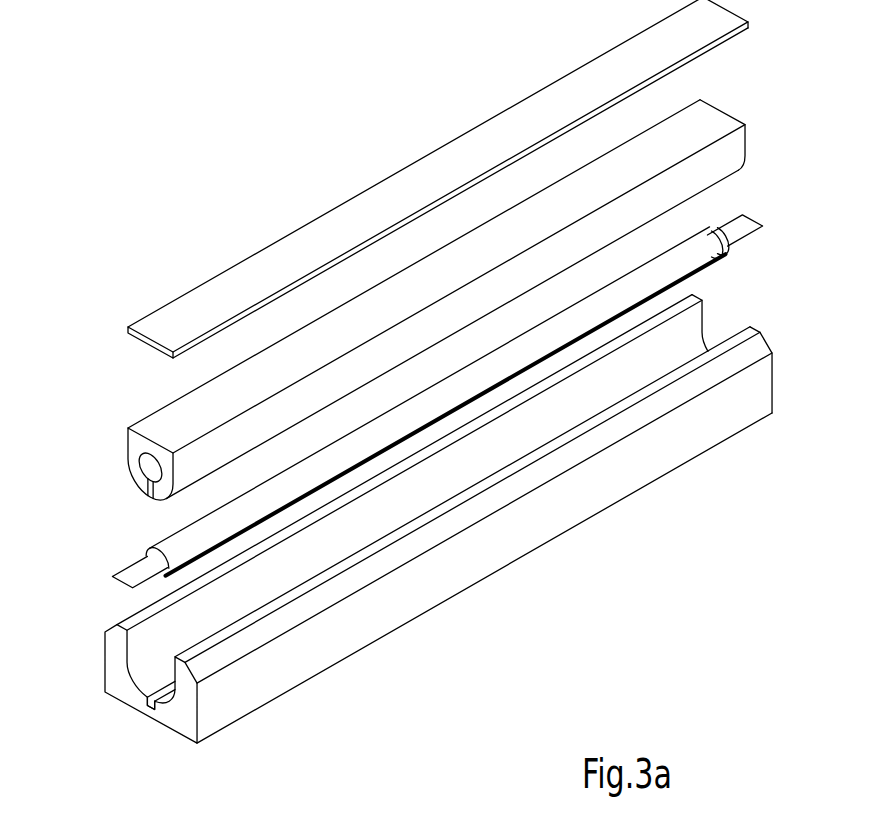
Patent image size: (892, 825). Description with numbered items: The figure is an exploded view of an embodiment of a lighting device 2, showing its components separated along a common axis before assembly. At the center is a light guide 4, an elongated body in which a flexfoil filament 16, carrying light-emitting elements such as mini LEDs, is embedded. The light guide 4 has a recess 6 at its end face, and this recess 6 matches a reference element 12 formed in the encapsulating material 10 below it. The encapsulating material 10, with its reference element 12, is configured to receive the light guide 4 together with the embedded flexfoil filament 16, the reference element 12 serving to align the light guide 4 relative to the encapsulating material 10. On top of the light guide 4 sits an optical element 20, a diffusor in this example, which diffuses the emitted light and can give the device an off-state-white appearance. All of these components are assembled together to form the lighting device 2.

The lighting device 2 is at (118, 168).
The light guide 4 is at (730, 150).
The recess 6 is at (128, 471).
The encapsulating material 10 is at (655, 455).
The reference element 12 is at (150, 696).
The flexfoil filament 16 is at (748, 222).
The optical element 20 is at (410, 185).